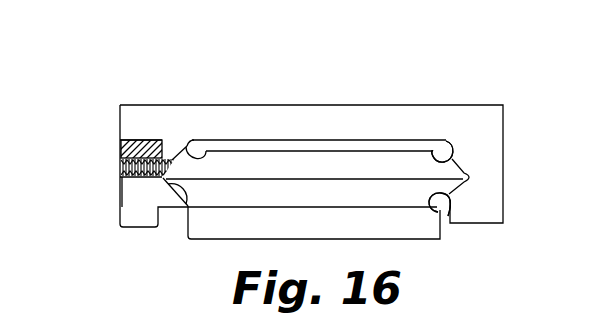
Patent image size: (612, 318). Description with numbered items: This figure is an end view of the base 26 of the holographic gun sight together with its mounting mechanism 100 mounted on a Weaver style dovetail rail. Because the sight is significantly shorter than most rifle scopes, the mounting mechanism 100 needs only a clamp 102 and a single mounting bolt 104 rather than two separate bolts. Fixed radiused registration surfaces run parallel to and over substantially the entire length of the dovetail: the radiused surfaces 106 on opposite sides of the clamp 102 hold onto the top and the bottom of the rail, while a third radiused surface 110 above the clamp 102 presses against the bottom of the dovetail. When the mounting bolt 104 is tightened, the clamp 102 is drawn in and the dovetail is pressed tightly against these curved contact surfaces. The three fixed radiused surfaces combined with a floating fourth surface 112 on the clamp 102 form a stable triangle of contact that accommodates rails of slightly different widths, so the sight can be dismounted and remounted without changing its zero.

The mounting mechanism 100 is at (162, 96).
The base 26 is at (365, 124).
The clamp 102 is at (128, 186).
The mounting bolt 104 is at (124, 142).
The radiused registration surface 110 is at (208, 152).
The floating fourth surface 112 is at (184, 205).
The radiused registration surface 106 is at (436, 158).